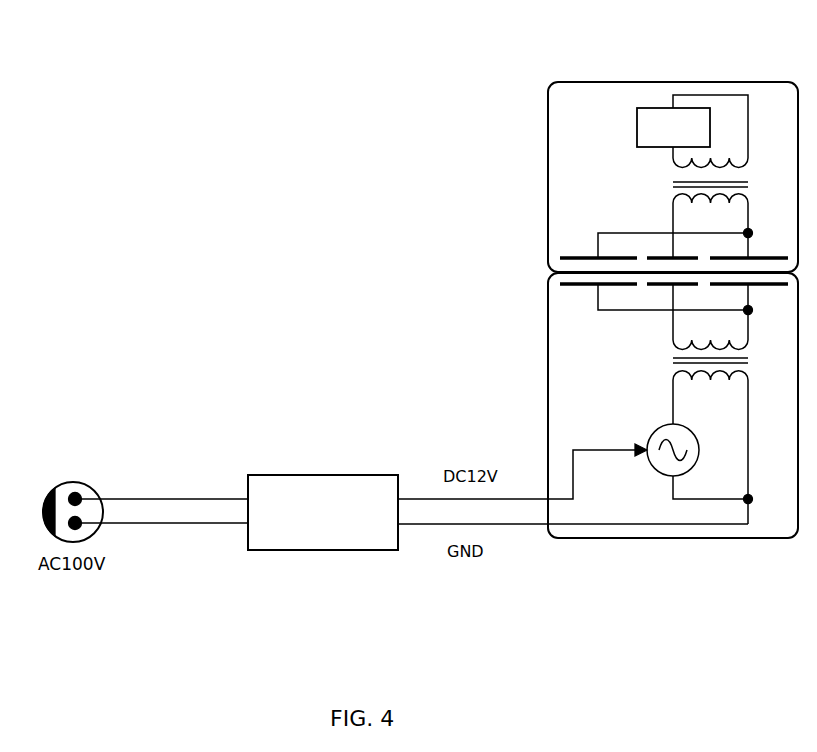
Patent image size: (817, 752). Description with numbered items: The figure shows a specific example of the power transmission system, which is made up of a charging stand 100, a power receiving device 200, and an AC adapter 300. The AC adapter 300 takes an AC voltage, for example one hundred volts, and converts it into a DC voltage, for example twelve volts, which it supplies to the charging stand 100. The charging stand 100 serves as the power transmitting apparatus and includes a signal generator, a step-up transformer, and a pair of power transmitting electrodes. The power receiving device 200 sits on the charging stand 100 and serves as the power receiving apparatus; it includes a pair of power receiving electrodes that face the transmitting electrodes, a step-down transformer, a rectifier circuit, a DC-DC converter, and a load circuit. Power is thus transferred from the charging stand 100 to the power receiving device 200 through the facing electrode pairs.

The charging stand 100 is at (760, 538).
The power receiving device 200 is at (750, 82).
The AC adapter 300 is at (312, 550).